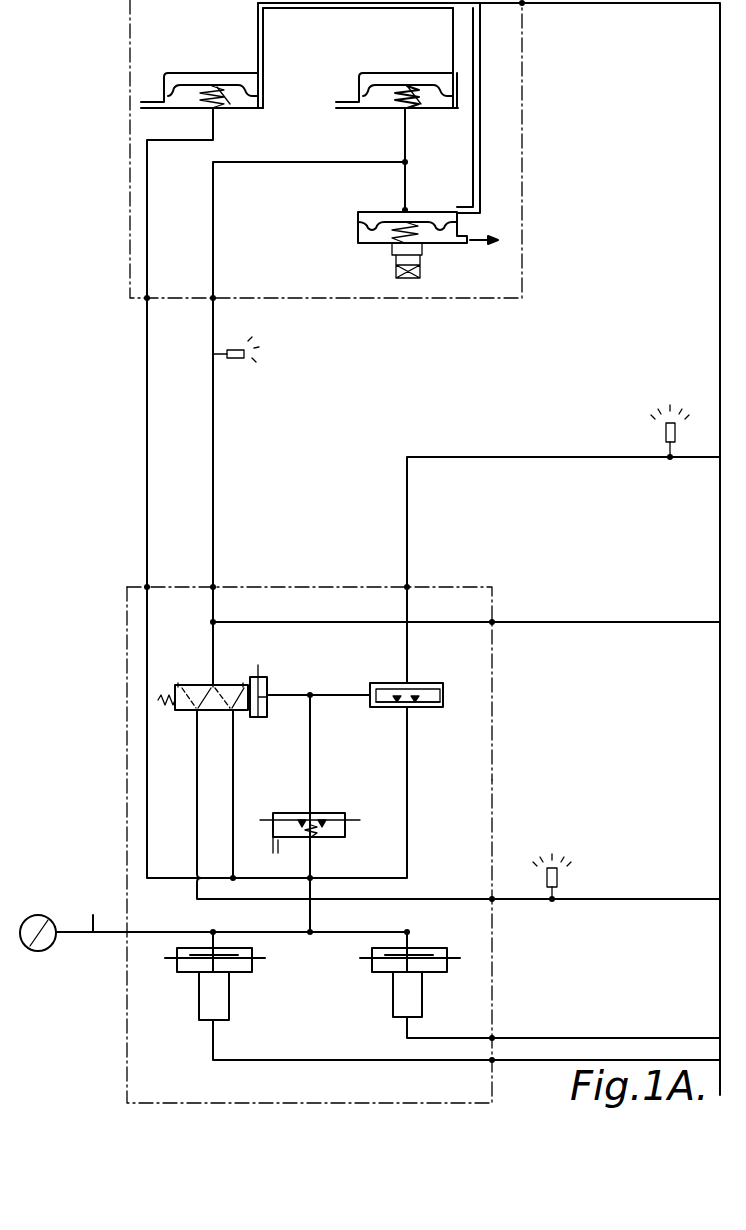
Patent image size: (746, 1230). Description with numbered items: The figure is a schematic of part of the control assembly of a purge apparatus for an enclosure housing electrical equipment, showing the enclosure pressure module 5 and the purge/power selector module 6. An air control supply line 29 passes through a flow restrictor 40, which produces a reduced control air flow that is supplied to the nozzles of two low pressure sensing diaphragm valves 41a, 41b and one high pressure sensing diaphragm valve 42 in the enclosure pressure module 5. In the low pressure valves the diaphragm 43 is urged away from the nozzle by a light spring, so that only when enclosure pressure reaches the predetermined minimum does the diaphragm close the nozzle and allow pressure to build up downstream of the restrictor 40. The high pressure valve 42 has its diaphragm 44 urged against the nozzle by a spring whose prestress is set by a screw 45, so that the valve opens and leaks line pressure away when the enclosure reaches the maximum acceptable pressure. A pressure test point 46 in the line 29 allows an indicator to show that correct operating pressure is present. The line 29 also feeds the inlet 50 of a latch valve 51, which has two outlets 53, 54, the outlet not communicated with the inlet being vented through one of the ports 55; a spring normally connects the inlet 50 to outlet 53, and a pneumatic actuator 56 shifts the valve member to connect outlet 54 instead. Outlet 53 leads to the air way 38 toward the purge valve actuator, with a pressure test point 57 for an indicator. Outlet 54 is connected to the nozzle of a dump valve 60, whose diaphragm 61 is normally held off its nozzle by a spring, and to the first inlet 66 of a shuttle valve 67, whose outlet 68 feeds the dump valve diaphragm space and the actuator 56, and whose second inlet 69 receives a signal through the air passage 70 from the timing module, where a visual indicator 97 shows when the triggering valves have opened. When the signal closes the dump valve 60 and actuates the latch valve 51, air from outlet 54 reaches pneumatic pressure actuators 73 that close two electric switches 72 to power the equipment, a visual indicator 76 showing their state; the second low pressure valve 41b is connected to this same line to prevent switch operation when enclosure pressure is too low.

The enclosure pressure module 5 is at (522, 152).
The purge/power selector module 6 is at (492, 780).
The air control supply line 29 is at (216, 503).
The air way 38 is at (661, 897).
The flow restrictor 40 is at (302, 622).
The low pressure sensing diaphragm valve 41a is at (378, 110).
The second low pressure sensing diaphragm valve 41b is at (310, 118).
The high pressure sensing diaphragm valve 42 is at (405, 222).
The diaphragm 43 is at (244, 90).
The diaphragm 44 is at (427, 220).
The screw 45 is at (410, 263).
The pressure test point 46 is at (236, 358).
The inlet 50 is at (206, 698).
The latch valve 51 is at (172, 716).
The outlet 53 is at (197, 713).
The outlet 54 is at (233, 713).
The ports 55 is at (178, 684).
The pneumatic actuator 56 is at (268, 688).
The pressure test point 57 is at (558, 877).
The dump valve 60 is at (320, 826).
The diaphragm 61 is at (330, 817).
The first inlet 66 is at (411, 690).
The shuttle valve 67 is at (444, 690).
The outlet 68 is at (370, 705).
The second inlet 69 is at (380, 683).
The air passage 70 is at (488, 460).
The electric switches 72 is at (229, 998).
The pneumatic pressure actuators 73 is at (252, 964).
The visual indicator 76 is at (46, 915).
The visual indicator 97 is at (664, 432).